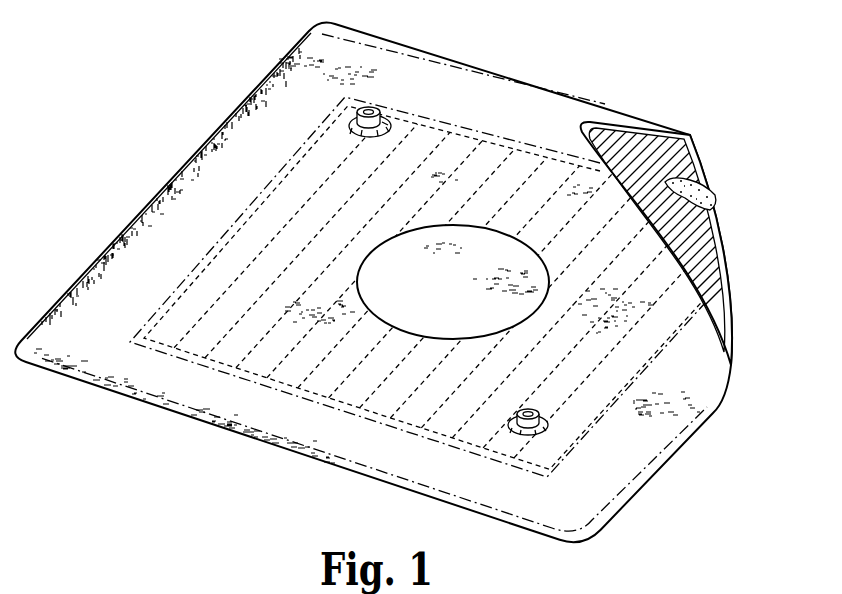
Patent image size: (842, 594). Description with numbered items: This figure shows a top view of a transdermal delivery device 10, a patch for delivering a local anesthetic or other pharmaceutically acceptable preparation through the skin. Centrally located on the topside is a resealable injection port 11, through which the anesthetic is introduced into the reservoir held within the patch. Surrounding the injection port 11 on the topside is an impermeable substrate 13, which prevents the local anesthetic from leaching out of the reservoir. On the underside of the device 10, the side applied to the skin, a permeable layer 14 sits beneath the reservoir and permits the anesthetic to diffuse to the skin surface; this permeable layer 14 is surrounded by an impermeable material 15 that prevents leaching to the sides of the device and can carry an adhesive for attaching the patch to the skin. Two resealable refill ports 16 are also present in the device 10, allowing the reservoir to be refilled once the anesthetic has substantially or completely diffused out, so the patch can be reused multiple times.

The transdermal delivery device 10 is at (715, 110).
The resealable injection port 11 is at (425, 280).
The impermeable substrate 13 is at (127, 293).
The permeable layer 14 is at (703, 200).
The impermeable material 15 is at (697, 153).
The resealable refill ports 16 is at (360, 115).